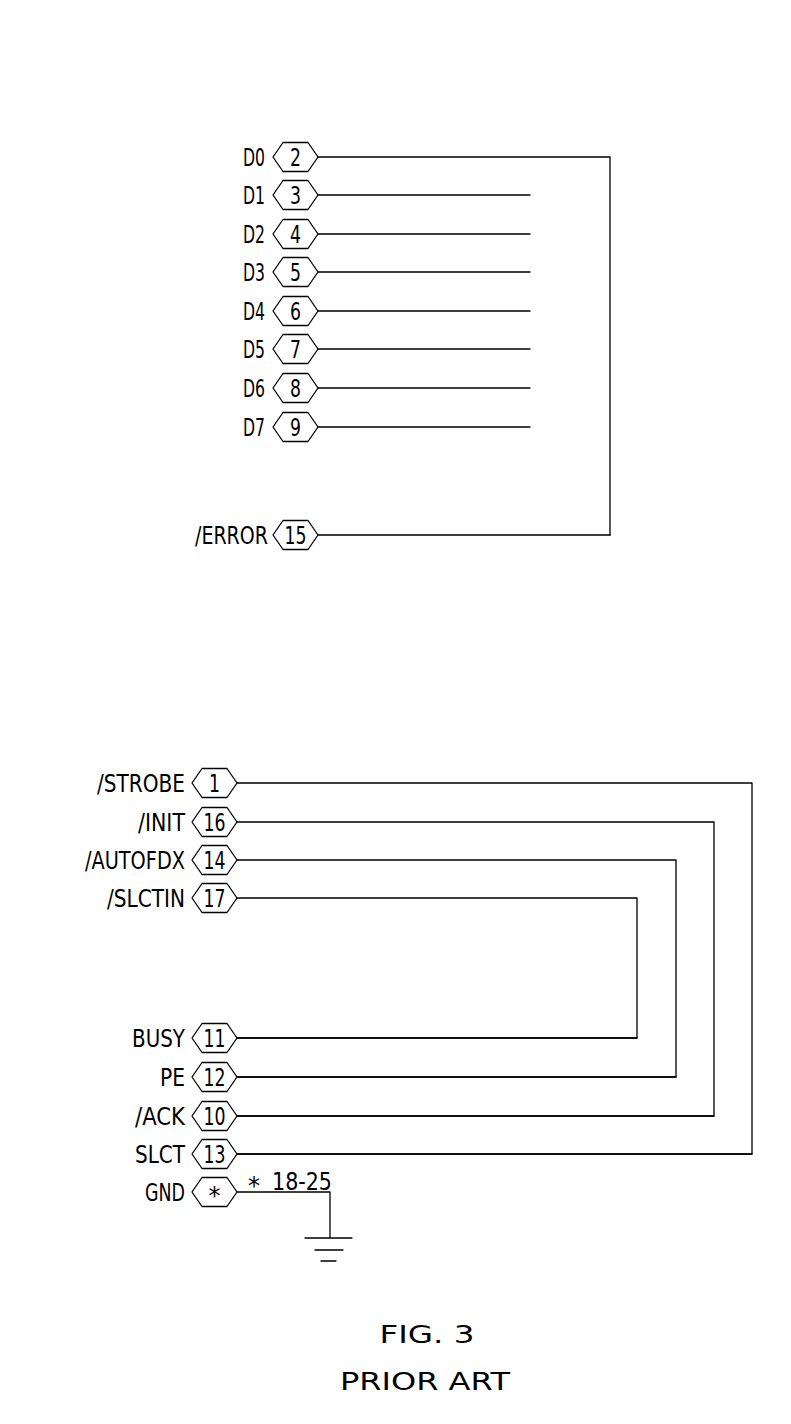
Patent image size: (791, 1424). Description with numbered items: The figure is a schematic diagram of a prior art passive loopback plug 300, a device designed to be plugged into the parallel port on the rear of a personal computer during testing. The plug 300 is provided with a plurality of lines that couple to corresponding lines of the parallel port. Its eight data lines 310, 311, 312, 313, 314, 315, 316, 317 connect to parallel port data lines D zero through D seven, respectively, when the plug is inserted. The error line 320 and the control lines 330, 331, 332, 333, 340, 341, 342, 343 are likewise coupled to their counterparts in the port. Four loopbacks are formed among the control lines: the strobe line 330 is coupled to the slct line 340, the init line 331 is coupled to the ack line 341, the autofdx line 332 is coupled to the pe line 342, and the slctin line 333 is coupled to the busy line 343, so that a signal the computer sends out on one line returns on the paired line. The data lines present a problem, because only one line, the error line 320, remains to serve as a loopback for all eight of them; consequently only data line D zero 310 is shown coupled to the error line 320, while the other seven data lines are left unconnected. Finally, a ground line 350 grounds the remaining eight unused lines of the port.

The prior art passive loopback plug 300 is at (607, 70).
The data line D0 310 is at (402, 157).
The data line D1 311 is at (402, 195).
The data line D2 312 is at (402, 234).
The data line D3 313 is at (402, 272).
The data line D4 314 is at (402, 311).
The data line D5 315 is at (402, 349).
The data line D6 316 is at (402, 388).
The data line D7 317 is at (402, 427).
The error line 320 is at (402, 535).
The strobe line 330 is at (308, 783).
The init line 331 is at (308, 822).
The autofdx line 332 is at (308, 860).
The slctin line 333 is at (308, 898).
The slct line 340 is at (308, 1154).
The ack line 341 is at (308, 1116).
The pe line 342 is at (308, 1077).
The busy line 343 is at (308, 1038).
The ground line 350 is at (330, 1212).